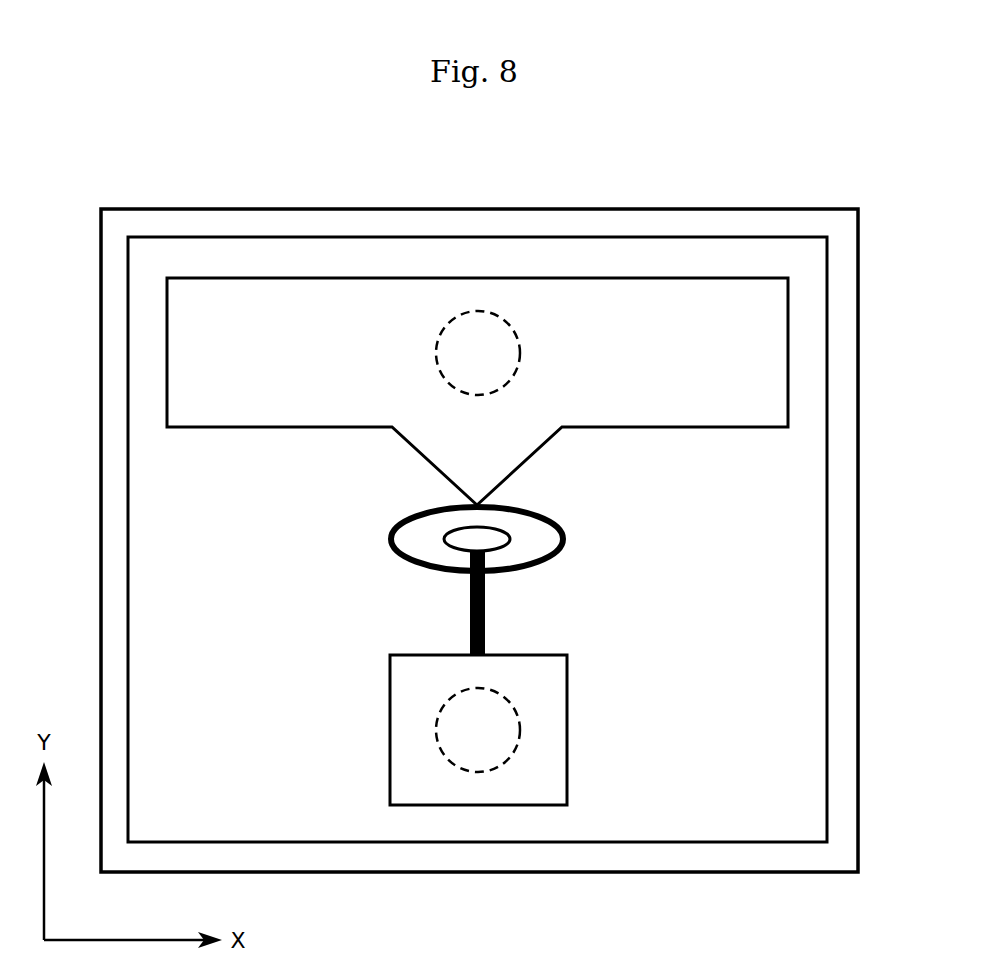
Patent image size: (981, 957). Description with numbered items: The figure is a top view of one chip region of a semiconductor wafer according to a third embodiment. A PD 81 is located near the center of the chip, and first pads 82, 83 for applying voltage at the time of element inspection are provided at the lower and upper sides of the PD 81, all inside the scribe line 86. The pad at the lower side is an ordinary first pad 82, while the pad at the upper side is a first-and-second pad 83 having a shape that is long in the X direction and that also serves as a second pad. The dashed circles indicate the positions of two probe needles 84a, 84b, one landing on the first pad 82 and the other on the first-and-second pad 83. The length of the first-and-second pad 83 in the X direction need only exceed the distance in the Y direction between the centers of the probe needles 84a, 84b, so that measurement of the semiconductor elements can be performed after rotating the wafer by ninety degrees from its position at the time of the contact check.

The scribe line 86 is at (464, 208).
The first-and-second pad 83 is at (786, 352).
The probe needle 84b is at (410, 350).
The PD 81 is at (566, 534).
The first pad 82 is at (568, 733).
The probe needle 84a is at (410, 724).